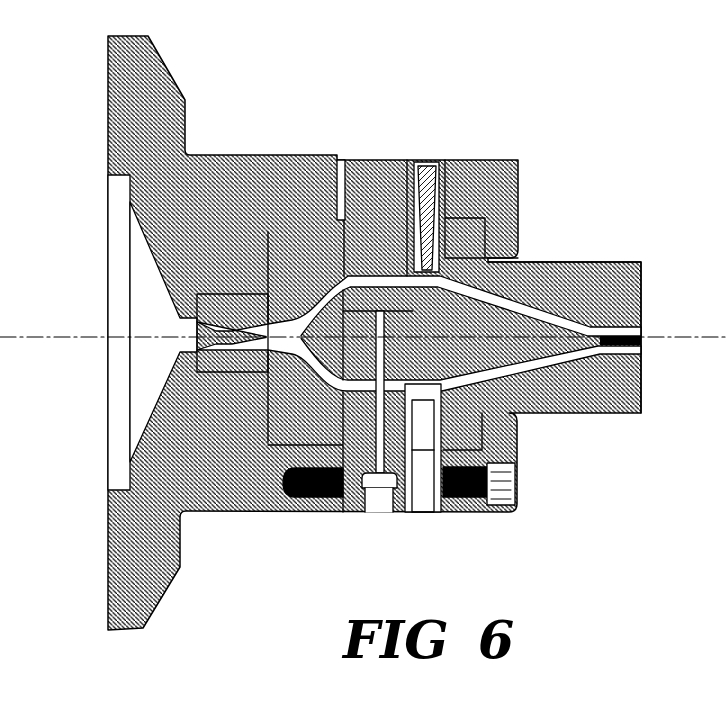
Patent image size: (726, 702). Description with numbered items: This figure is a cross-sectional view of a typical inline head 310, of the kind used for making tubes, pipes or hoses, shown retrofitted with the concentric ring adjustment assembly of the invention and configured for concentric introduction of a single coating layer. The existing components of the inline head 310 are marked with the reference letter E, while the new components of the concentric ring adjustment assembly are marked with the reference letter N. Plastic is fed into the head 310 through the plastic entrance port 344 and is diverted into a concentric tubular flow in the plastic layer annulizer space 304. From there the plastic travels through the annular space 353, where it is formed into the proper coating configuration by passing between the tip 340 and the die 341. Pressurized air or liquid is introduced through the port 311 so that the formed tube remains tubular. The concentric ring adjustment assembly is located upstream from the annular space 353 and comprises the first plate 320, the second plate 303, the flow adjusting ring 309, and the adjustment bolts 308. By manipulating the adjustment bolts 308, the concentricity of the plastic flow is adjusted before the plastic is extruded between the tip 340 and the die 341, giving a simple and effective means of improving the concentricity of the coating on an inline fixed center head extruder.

The inline head 310 is at (643, 97).
The second plate 303 is at (437, 205).
The plastic layer annulizer space 304 is at (332, 282).
The adjustment bolts 308 is at (428, 160).
The flow adjusting ring 309 is at (505, 232).
The port 311 is at (380, 494).
The first plate 320 is at (412, 160).
The tip 340 is at (602, 292).
The die 341 is at (632, 267).
The plastic entrance port 344 is at (180, 338).
The annular space 353 is at (516, 300).
The new components N is at (375, 160).
The existing components E is at (165, 272).